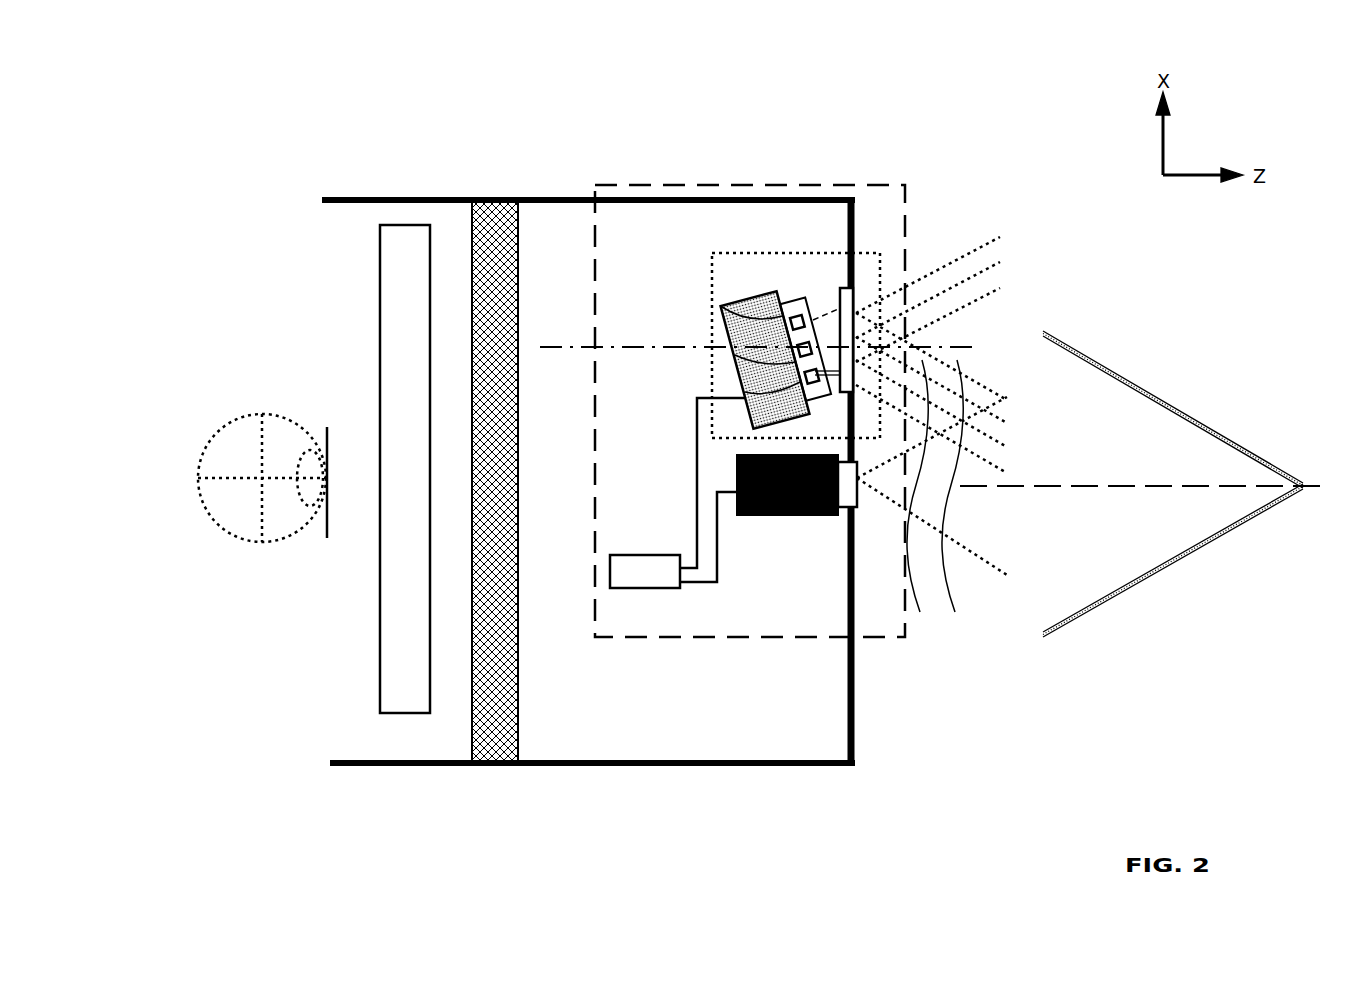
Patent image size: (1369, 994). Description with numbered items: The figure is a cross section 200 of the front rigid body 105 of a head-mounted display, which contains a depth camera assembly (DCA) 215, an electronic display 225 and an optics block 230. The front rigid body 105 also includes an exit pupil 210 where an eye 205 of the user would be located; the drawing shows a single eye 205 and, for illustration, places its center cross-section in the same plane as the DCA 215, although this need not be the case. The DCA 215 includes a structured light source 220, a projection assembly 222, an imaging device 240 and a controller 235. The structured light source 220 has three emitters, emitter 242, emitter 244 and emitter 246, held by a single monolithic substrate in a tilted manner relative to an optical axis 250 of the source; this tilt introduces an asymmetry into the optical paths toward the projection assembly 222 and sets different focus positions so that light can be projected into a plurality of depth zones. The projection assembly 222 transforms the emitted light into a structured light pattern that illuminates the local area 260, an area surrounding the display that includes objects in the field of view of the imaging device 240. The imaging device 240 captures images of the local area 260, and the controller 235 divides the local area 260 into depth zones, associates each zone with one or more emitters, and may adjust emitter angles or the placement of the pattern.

The cross section 200 is at (764, 476).
The front rigid body 105 is at (888, 805).
The eye 205 is at (228, 533).
The exit pupil 210 is at (325, 427).
The depth camera assembly (DCA) 215 is at (625, 185).
The structured light source 220 is at (750, 253).
The projection assembly 222 is at (857, 253).
The electronic display 225 is at (470, 247).
The optics block 230 is at (415, 713).
The controller 235 is at (632, 588).
The imaging device 240 is at (790, 515).
The emitter 242 is at (754, 319).
The emitter 244 is at (765, 360).
The emitter 246 is at (747, 393).
The optical axis 250 is at (967, 345).
The local area 260 is at (1153, 573).